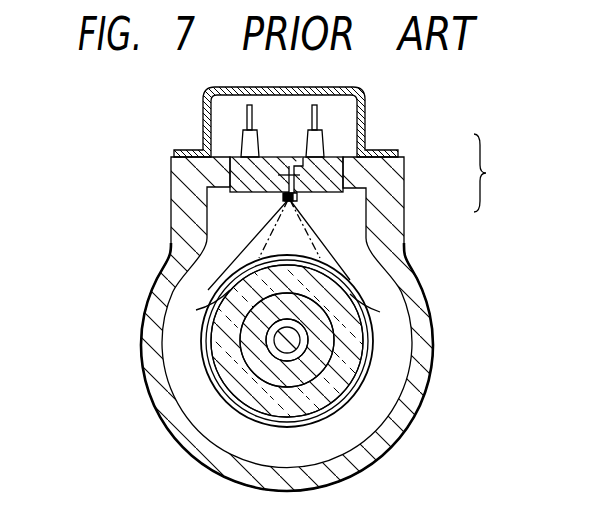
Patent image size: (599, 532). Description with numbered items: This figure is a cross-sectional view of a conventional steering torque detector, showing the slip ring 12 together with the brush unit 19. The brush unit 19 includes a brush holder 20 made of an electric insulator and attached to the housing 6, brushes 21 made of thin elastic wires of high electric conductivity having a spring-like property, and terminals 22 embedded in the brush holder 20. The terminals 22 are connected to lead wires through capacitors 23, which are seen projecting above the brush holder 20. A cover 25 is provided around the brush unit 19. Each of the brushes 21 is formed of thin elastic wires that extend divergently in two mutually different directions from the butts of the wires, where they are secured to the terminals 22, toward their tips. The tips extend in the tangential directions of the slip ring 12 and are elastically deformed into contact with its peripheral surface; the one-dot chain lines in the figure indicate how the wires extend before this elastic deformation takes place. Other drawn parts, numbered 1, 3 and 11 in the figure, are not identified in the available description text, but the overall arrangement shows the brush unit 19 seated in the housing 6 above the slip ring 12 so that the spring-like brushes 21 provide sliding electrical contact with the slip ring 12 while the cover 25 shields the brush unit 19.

The armature core 1 is at (243, 360).
The rotor shaft 3 is at (283, 386).
The housing 6 is at (143, 340).
The rotor 11 is at (353, 362).
The slip ring 12 is at (373, 318).
The brush unit 19 is at (509, 186).
The brush holder 20 is at (336, 172).
The brushes 21 is at (327, 250).
The terminals 22 is at (297, 195).
The capacitors 23 is at (322, 137).
The cover 25 is at (228, 88).